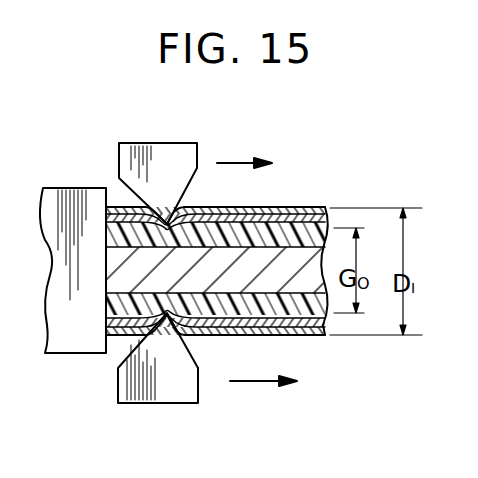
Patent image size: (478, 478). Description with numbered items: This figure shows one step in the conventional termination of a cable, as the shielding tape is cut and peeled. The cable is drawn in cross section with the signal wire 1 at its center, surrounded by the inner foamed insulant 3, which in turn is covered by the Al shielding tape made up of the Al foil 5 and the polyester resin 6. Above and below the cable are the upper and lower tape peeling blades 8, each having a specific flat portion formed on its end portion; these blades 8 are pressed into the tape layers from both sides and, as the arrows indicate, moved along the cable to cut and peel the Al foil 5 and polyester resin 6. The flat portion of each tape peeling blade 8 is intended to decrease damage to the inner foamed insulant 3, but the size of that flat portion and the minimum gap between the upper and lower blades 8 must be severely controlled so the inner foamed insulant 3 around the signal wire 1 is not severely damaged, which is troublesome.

The signal wire 1 is at (270, 272).
The inner foamed insulant 3 is at (330, 240).
The Al foil 5 is at (310, 216).
The polyester resin 6 is at (277, 212).
The tape peeling blade 8 is at (163, 155).